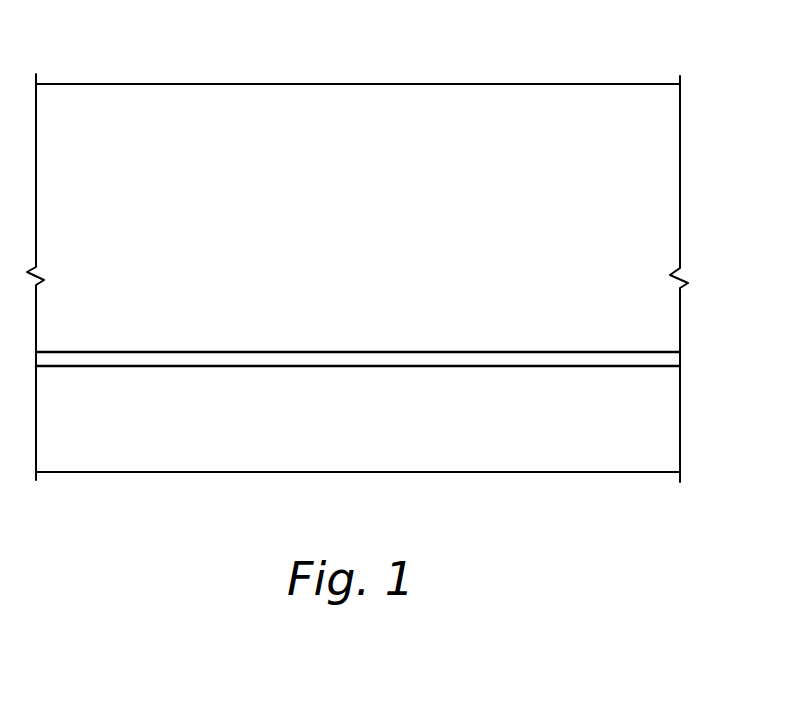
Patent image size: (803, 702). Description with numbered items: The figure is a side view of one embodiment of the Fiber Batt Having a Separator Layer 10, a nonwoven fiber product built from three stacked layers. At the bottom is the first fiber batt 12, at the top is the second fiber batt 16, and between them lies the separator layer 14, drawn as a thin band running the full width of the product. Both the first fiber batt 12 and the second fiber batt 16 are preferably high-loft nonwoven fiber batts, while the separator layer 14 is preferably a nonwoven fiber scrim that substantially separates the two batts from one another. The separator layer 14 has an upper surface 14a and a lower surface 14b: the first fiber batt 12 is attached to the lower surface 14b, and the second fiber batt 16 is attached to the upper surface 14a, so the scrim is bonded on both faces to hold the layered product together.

The Fiber Batt Having a Separator Layer 10 is at (573, 42).
The first fiber batt 12 is at (670, 420).
The separator layer 14 is at (384, 359).
The upper surface 14a is at (203, 352).
The lower surface 14b is at (203, 366).
The second fiber batt 16 is at (672, 182).